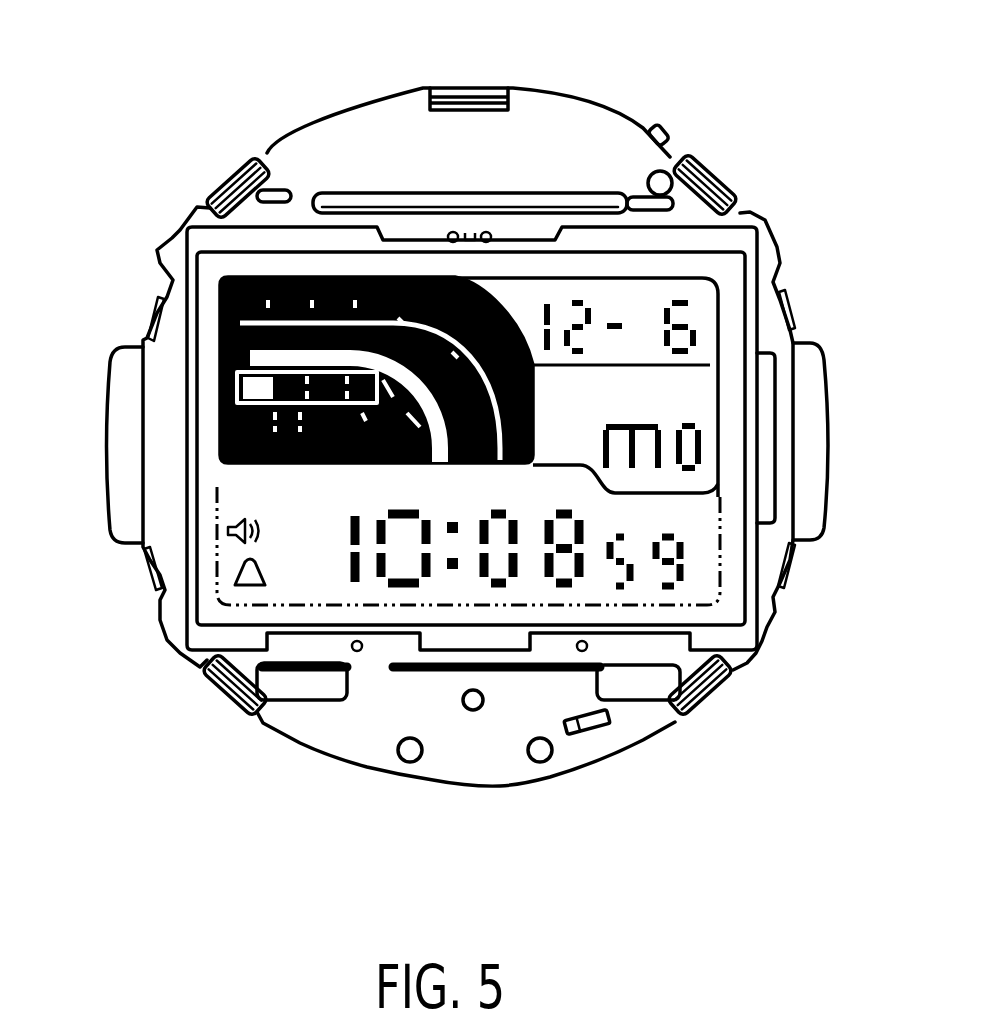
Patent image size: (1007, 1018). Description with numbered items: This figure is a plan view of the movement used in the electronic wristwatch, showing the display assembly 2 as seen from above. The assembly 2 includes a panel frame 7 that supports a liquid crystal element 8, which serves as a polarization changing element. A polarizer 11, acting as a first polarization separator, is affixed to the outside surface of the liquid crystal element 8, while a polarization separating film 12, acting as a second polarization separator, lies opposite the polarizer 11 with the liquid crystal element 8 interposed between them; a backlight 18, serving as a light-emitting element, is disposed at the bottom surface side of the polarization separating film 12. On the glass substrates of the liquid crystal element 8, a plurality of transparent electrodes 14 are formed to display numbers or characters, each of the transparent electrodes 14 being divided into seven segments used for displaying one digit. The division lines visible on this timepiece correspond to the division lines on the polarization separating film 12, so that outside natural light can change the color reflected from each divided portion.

The assembly 2 is at (590, 98).
The panel frame 7 is at (160, 378).
The liquid crystal element 8 is at (472, 355).
The polarization separating film 12 is at (472, 355).
The backlight 18 is at (293, 228).
The polarizer 11 is at (730, 298).
The transparent electrodes 14 is at (577, 300).